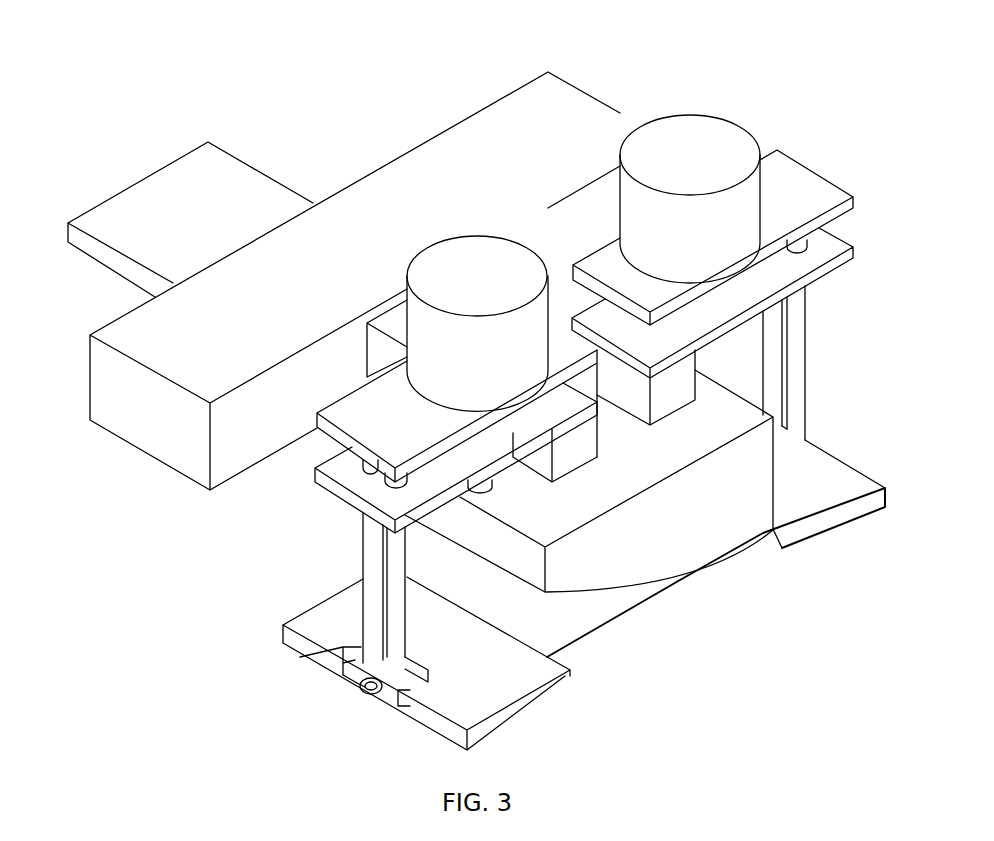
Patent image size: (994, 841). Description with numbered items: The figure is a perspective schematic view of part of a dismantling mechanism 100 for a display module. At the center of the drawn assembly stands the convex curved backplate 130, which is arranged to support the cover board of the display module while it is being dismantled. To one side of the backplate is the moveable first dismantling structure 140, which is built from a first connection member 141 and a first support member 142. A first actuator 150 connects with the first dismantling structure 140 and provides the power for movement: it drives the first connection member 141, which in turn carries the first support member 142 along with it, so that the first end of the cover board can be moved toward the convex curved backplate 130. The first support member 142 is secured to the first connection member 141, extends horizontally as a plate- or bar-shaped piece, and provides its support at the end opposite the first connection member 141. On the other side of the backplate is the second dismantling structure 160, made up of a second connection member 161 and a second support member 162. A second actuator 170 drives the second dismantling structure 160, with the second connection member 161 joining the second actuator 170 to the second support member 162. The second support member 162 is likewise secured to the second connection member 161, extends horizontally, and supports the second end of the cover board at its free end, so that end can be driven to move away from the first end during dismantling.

The dismantling mechanism 100 is at (108, 135).
The convex curved backplate 130 is at (632, 548).
The first dismantling structure 140 is at (363, 657).
The first connection member 141 is at (375, 588).
The first support member 142 is at (463, 693).
The first actuator 150 is at (468, 262).
The second dismantling structure 160 is at (797, 447).
The second connection member 161 is at (797, 387).
The second support member 162 is at (795, 520).
The second actuator 170 is at (703, 133).